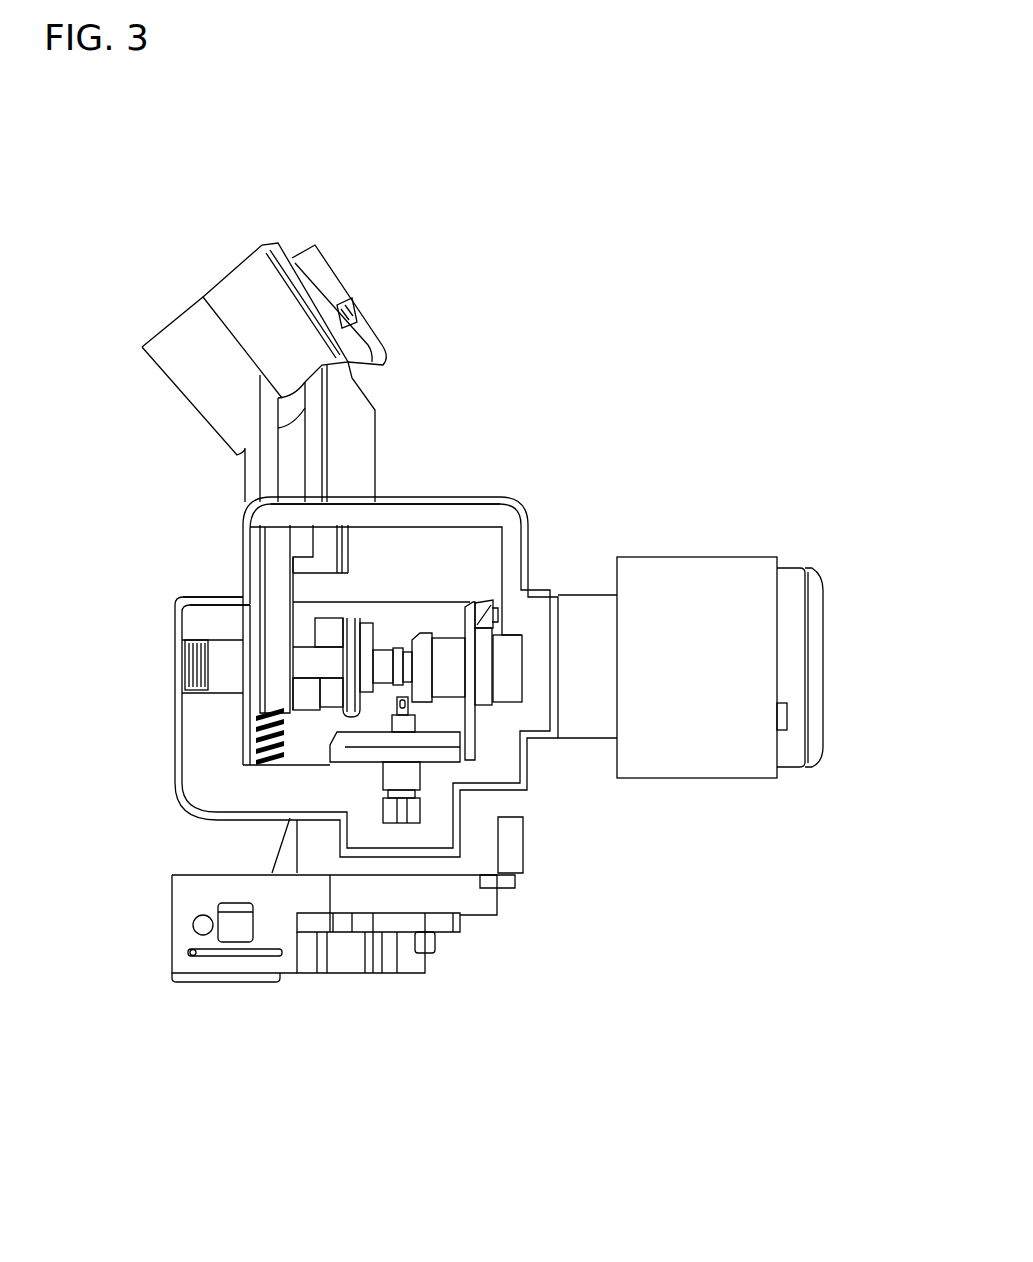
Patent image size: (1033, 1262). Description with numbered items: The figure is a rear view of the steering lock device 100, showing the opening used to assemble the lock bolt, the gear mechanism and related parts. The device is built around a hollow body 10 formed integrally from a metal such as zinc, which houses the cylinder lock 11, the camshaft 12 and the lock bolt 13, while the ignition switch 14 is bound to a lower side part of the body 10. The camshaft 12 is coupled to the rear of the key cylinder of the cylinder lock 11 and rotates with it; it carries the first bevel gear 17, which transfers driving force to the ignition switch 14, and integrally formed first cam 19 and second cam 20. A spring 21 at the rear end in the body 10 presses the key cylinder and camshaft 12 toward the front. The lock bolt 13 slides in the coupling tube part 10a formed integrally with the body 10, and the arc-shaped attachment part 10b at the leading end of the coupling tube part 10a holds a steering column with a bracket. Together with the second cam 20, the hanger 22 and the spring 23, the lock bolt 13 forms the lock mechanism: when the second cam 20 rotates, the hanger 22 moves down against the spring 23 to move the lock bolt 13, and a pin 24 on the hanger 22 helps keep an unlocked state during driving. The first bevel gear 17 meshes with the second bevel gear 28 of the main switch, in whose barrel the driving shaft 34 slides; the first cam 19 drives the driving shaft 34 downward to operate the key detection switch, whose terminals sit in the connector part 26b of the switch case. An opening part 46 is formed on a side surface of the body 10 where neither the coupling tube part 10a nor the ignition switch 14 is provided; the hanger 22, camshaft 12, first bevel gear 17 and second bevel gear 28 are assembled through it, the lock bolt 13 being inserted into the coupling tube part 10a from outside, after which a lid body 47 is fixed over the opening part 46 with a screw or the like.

The steering lock device 100 is at (657, 507).
The body 10 is at (493, 500).
The coupling tube part 10a is at (348, 418).
The attachment part 10b is at (318, 273).
The cylinder lock 11 is at (797, 567).
The camshaft 12 is at (382, 667).
The lock bolt 13 is at (328, 552).
The ignition switch 14 is at (352, 957).
The first bevel gear 17 is at (477, 600).
The first cam 19 is at (430, 675).
The second cam 20 is at (362, 618).
The spring 21 is at (185, 667).
The hanger 22 is at (280, 605).
The spring 23 is at (260, 748).
The pin 24 is at (307, 693).
The connector part 26b is at (212, 963).
The second bevel gear 28 is at (337, 745).
The driving shaft 34 is at (403, 705).
The opening part 46 is at (417, 547).
The lid body 47 is at (208, 600).